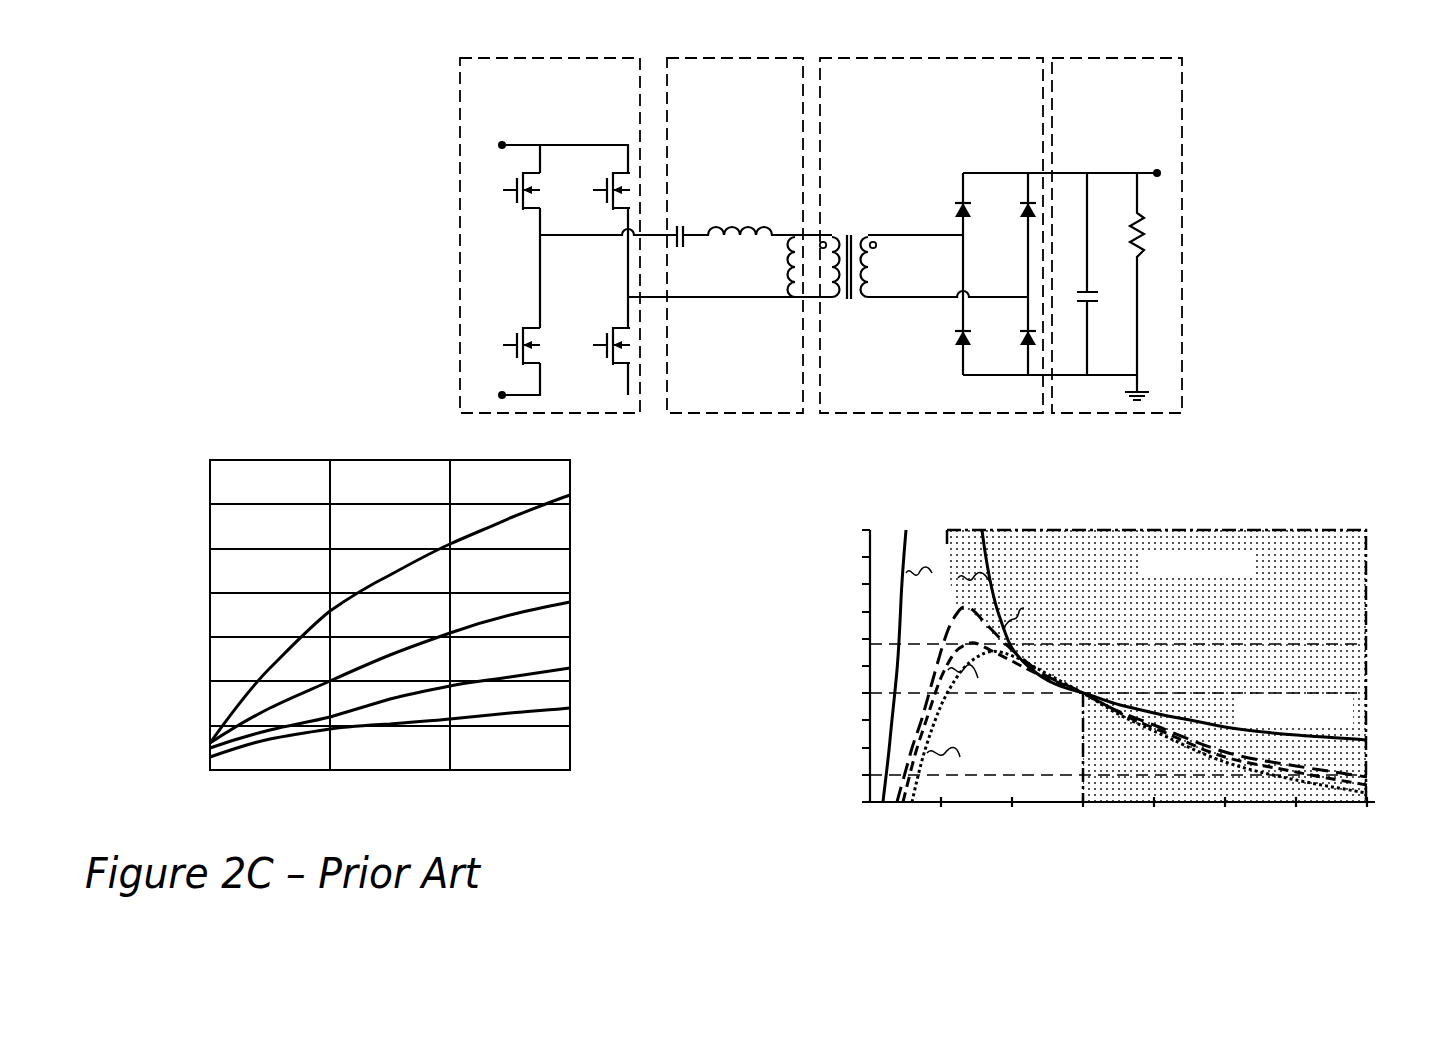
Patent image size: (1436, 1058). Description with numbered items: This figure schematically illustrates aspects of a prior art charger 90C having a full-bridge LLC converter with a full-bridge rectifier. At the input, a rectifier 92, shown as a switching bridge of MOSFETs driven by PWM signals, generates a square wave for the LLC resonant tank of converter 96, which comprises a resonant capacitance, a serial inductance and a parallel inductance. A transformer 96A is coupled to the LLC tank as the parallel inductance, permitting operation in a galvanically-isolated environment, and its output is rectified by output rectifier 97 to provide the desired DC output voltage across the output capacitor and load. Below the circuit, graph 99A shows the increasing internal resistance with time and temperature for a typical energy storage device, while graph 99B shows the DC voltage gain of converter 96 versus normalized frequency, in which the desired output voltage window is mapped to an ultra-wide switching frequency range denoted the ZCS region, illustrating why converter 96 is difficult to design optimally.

The charger 90C is at (557, 23).
The rectifier 92 is at (483, 52).
The converter 96 is at (752, 52).
The transformer 96A is at (851, 204).
The rectifier 97 is at (960, 52).
The graph 99A is at (141, 430).
The graph 99B is at (890, 489).